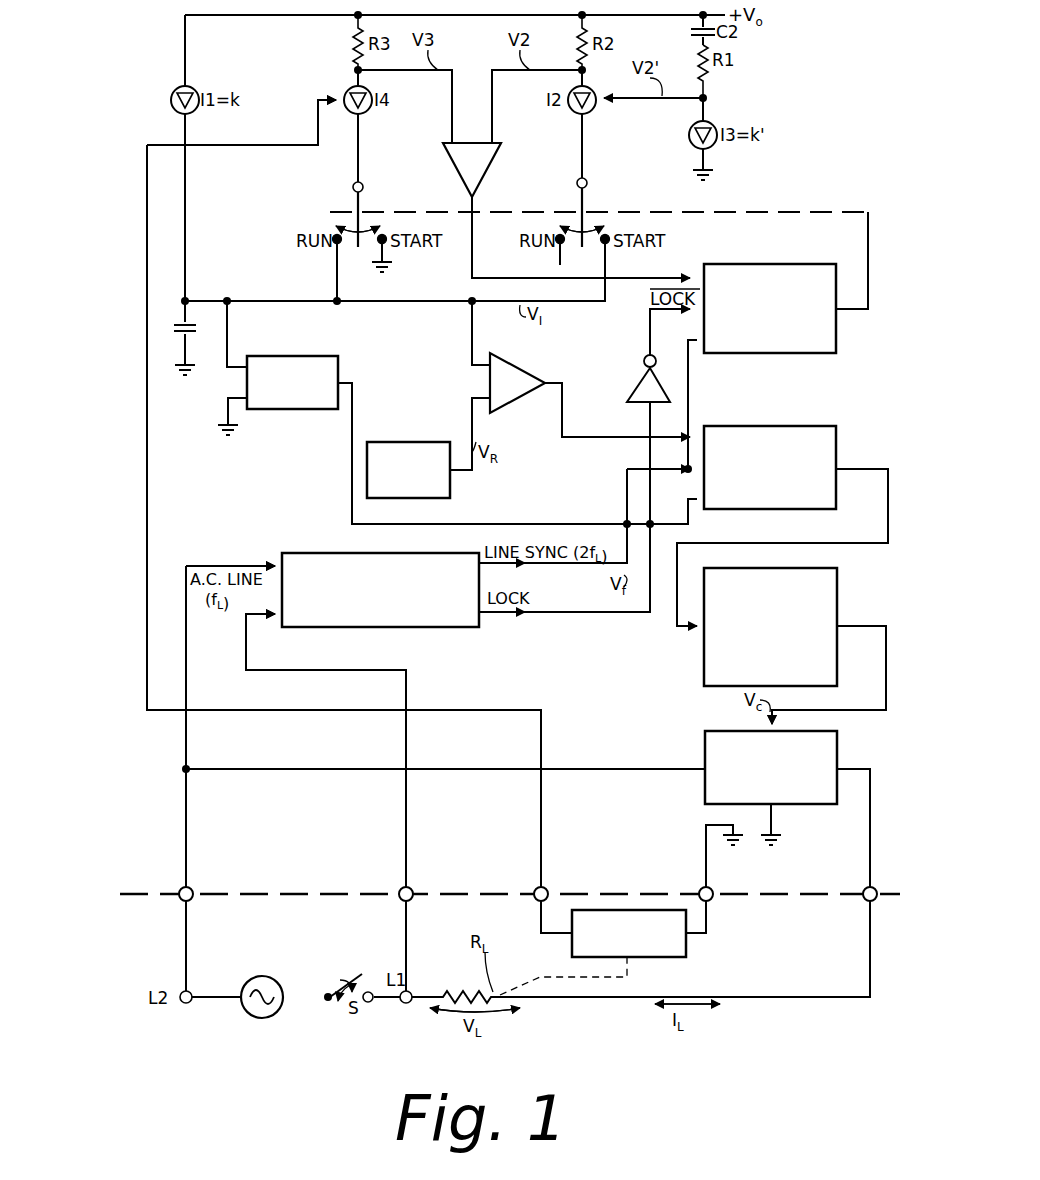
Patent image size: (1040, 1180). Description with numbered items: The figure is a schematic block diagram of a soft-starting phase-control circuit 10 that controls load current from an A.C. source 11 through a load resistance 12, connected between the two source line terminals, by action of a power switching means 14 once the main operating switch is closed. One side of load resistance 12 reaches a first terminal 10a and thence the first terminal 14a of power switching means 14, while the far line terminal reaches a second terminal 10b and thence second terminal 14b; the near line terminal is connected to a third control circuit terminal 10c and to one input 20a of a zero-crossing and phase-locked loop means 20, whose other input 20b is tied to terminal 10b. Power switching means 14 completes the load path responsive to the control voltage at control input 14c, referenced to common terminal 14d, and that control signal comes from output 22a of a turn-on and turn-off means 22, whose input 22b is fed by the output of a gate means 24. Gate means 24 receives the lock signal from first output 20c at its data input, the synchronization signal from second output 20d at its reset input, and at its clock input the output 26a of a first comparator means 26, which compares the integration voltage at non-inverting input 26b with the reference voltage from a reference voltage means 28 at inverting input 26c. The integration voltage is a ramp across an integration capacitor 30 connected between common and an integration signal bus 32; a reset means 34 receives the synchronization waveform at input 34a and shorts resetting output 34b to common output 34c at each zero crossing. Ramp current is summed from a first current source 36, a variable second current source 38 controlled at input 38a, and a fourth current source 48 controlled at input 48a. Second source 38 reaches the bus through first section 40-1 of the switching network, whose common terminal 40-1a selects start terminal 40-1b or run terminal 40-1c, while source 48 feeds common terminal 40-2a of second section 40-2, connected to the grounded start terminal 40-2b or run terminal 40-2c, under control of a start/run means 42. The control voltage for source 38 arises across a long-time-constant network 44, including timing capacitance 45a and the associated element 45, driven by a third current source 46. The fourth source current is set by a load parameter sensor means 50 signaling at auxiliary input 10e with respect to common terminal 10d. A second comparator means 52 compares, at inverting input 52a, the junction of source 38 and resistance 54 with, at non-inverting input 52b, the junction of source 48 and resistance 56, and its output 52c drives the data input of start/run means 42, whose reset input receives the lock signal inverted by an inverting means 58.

The soft-starting phase-control circuit 10 is at (834, 141).
The first terminal 10a is at (864, 886).
The second terminal 10b is at (182, 888).
The third control circuit terminal 10c is at (400, 886).
The circuit common terminal 10d is at (700, 886).
The circuit auxiliary control input 10e is at (536, 886).
The A.C. source 11 is at (260, 976).
The load resistance 12 is at (478, 992).
The power switching means 14 is at (704, 796).
The first terminal of power switching means 14a is at (840, 766).
The second terminal of power switching means 14b is at (702, 766).
The control input 14c is at (766, 724).
The circuit common potential terminal 14d is at (772, 812).
The zero-crossing and phase-locked loop means 20 is at (332, 553).
The first input of PLL means 20a is at (264, 620).
The second input of PLL means 20b is at (254, 564).
The first output of PLL means 20c is at (498, 616).
The second output of PLL means 20d is at (508, 568).
The turn-on and turn-off means 22 is at (790, 568).
The output of turn-on and turn-off means 22a is at (840, 626).
The input of turn-on and turn-off means 22b is at (696, 630).
The gate means 24 is at (788, 426).
The first comparator means 26 is at (526, 366).
The output of first comparator means 26a is at (550, 386).
The non-inverting input of first comparator 26b is at (472, 366).
The inverting input of first comparator 26c is at (476, 398).
The reference voltage means 28 is at (424, 444).
The integration capacitor 30 is at (182, 332).
The integration signal bus 32 is at (386, 302).
The reset means 34 is at (314, 356).
The input of reset means 34a is at (350, 390).
The resetting output 34b is at (232, 360).
The common output of reset means 34c is at (224, 432).
The first current source 36 is at (196, 86).
The second current source 38 is at (588, 112).
The control input of second current source 38a is at (607, 102).
The first section of start/run switching network 40-1 is at (594, 214).
The first-section switch common terminal 40-1a is at (588, 180).
The first-section switch first selectable terminal 40-1b is at (608, 244).
The first-section switch second selectable terminal 40-1c is at (558, 246).
The second start/run switch section 40-2 is at (322, 219).
The second-section switch common terminal 40-2a is at (350, 186).
The second-section switch first selectable terminal 40-2b is at (386, 244).
The second-section switch second selectable terminal 40-2c is at (334, 244).
The start/run means 42 is at (786, 262).
The long-time-constant network 44 is at (742, 56).
The capacitor C2 45 is at (690, 32).
The timing capacitance 45a is at (712, 72).
The third current source 46 is at (692, 142).
The fourth current source 48 is at (366, 108).
The control input of fourth current source 48a is at (331, 98).
The load parameter sensor means 50 is at (686, 954).
The second comparator means 52 is at (488, 166).
The inverting input of second comparator 52a is at (500, 142).
The non-inverting input of second comparator 52b is at (444, 142).
The output of second comparator 52c is at (470, 198).
The resistance 54 is at (577, 44).
The resistance 56 is at (348, 46).
The inverting means 58 is at (630, 386).